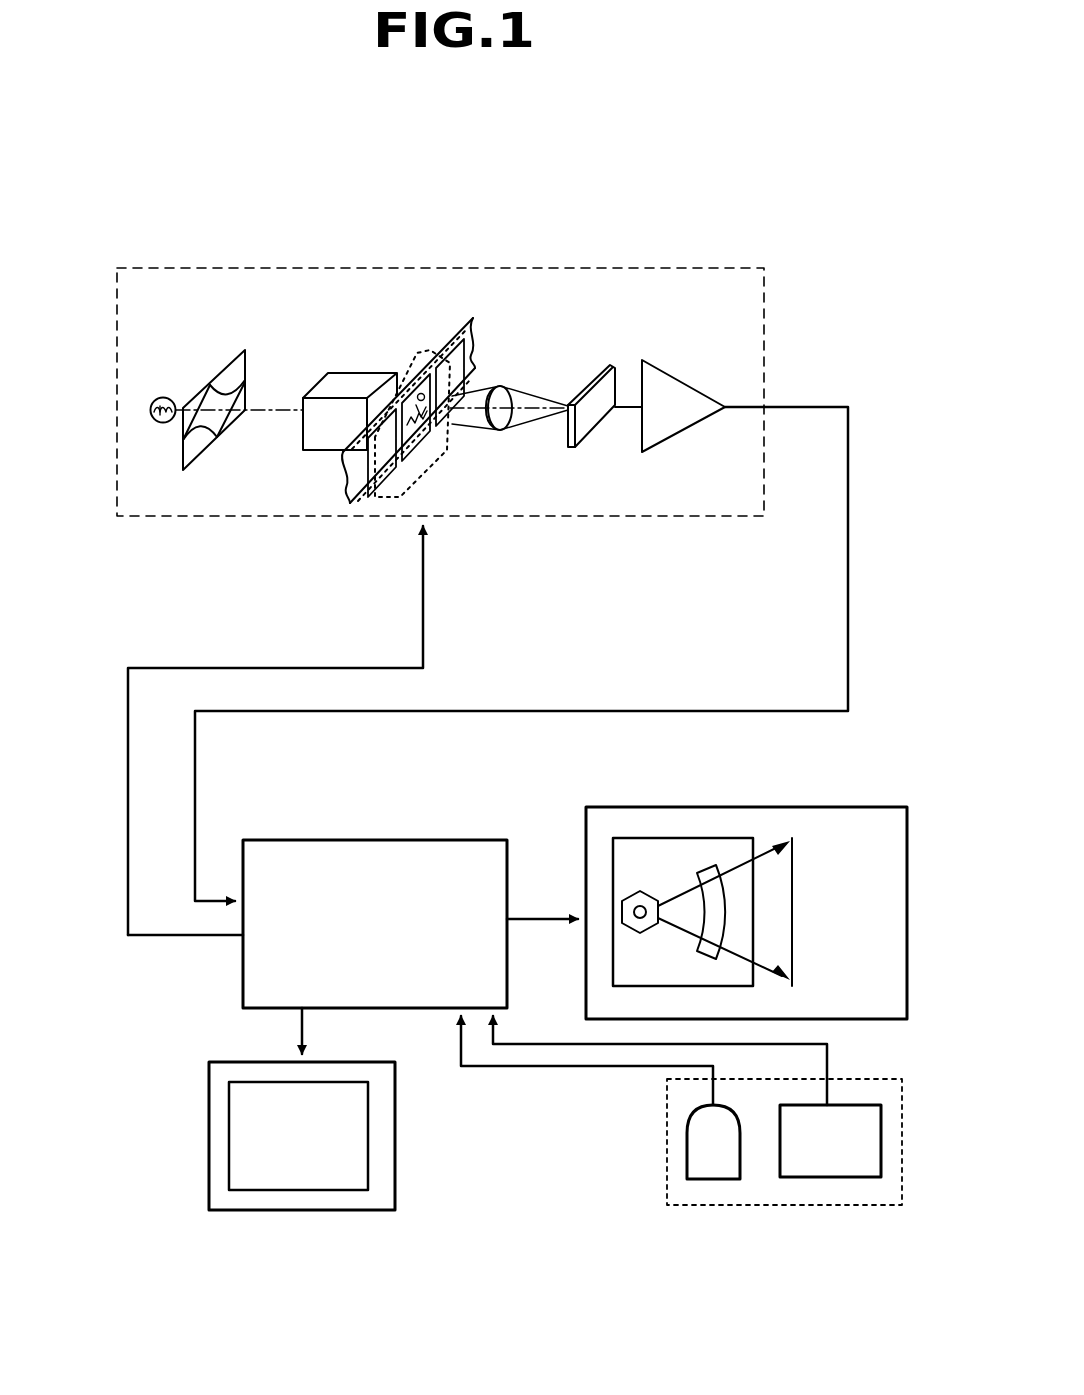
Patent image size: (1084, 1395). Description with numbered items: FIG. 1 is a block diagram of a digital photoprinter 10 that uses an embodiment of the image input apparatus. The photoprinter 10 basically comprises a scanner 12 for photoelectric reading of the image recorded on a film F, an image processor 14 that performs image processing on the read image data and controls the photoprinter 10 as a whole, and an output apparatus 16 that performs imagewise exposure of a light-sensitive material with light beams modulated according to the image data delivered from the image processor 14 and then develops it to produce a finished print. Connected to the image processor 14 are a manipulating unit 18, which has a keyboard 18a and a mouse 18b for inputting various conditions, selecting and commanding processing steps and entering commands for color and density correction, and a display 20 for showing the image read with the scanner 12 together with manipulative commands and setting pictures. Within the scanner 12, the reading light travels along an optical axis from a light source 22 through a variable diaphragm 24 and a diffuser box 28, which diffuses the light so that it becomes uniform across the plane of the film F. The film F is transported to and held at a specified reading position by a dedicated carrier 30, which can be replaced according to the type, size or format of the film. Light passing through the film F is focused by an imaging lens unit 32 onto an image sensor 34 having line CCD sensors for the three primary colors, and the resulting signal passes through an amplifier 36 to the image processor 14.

The digital photoprinter 10 is at (838, 278).
The scanner 12 is at (183, 519).
The image processor 14 is at (373, 839).
The output apparatus 16 is at (741, 806).
The manipulating unit 18 is at (784, 1191).
The keyboard 18a is at (833, 1180).
The mouse 18b is at (707, 1182).
The display 20 is at (293, 1212).
The light source 22 is at (160, 397).
The variable diaphragm 24 is at (218, 372).
The diffuser box 28 is at (343, 392).
The carrier 30 is at (450, 452).
The imaging lens unit 32 is at (500, 386).
The image sensor 34 is at (590, 388).
The amplifier 36 is at (686, 435).
The film F is at (463, 318).